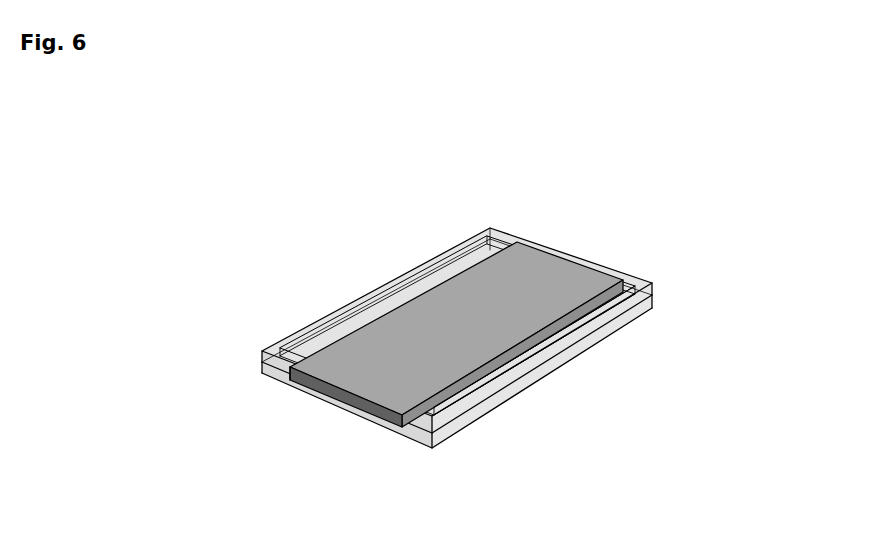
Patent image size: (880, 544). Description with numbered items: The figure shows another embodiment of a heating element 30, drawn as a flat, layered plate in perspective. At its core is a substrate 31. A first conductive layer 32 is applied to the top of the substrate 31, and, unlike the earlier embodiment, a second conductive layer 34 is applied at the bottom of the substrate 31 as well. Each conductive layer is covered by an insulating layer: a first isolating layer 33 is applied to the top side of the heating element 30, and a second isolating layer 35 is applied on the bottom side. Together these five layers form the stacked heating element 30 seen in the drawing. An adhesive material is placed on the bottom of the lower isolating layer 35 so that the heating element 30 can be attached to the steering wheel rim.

The heating element 30 is at (433, 340).
The substrate 31 is at (276, 369).
The first conductive layer 32 is at (400, 426).
The first isolating layer 33 is at (557, 337).
The second conductive layer 34 is at (295, 381).
The second isolating layer 35 is at (548, 370).